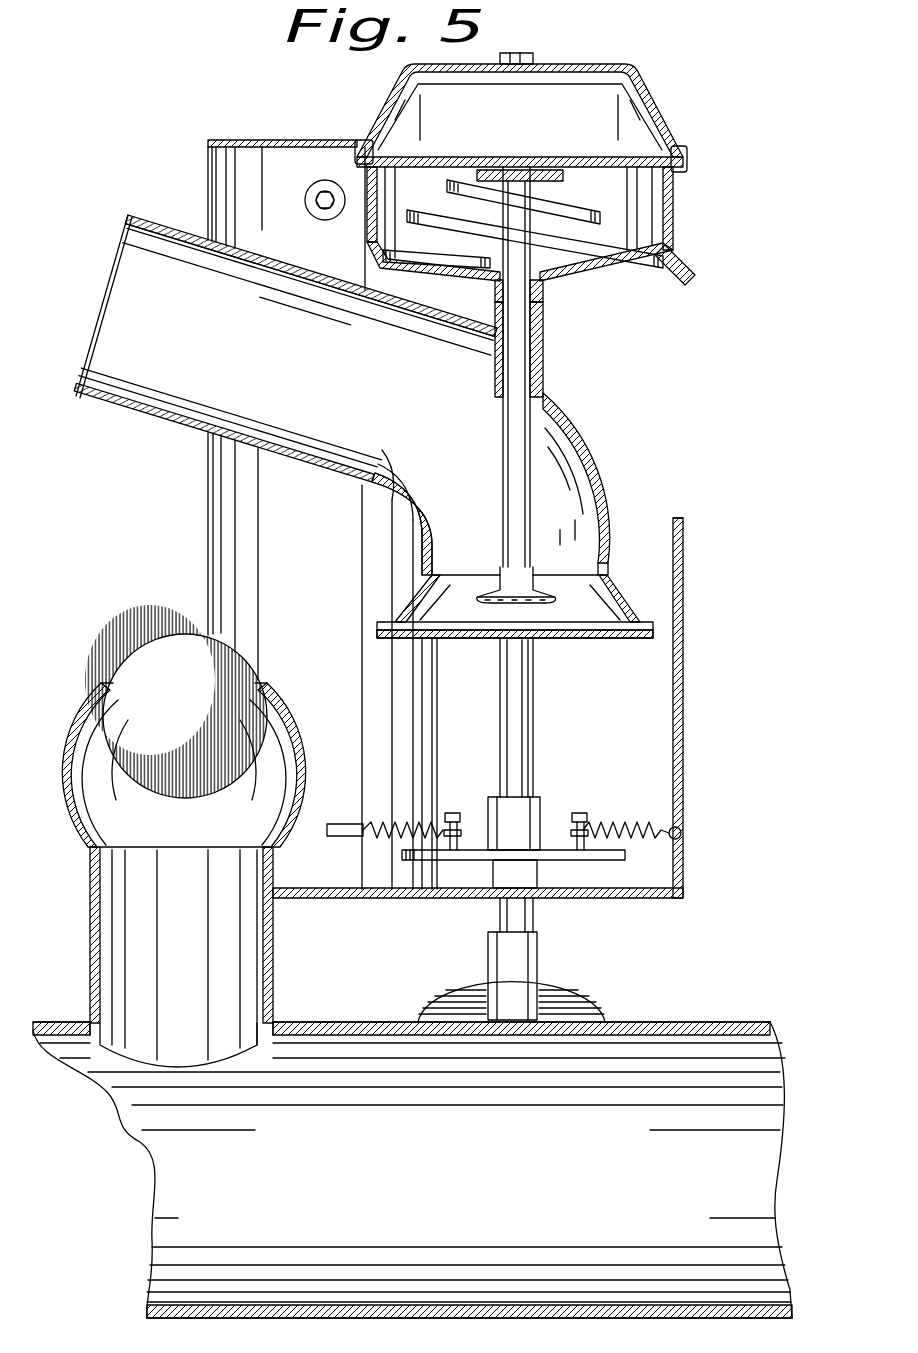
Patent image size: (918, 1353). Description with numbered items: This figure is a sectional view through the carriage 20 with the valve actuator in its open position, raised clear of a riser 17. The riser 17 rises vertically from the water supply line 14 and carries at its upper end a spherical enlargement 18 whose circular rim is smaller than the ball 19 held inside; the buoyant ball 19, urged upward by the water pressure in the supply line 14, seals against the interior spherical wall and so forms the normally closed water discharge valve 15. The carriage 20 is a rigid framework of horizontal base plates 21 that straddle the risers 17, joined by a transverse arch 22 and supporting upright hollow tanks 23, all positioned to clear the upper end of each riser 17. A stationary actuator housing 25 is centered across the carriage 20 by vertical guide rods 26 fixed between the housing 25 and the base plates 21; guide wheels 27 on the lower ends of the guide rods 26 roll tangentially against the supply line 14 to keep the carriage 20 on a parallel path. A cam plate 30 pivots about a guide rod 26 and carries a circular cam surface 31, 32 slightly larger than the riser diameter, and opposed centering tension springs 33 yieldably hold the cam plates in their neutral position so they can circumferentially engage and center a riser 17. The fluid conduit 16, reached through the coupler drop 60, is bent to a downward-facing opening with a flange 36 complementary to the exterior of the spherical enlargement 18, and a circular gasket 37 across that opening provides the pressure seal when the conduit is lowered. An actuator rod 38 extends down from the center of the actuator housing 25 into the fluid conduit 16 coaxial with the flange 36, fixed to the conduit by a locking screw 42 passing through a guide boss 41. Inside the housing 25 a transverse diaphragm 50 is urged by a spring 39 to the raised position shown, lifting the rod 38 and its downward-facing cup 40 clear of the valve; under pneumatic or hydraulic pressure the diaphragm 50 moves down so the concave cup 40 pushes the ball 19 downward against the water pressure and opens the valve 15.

The water supply line 14 is at (144, 1136).
The water discharge valve 15 is at (304, 778).
The fluid conduit 16 is at (163, 426).
The riser 17 is at (275, 962).
The spherical enlargement 18 is at (300, 748).
The ball 19 is at (246, 672).
The carriage 20 is at (696, 543).
The base plates 21 is at (432, 897).
The transverse arch 22 is at (686, 576).
The hollow tanks 23 is at (206, 556).
The actuator housing 25 is at (670, 207).
The guide rods 26 is at (533, 708).
The guide wheels 27 is at (572, 990).
The cam plate 30 is at (556, 860).
The circular cam surface 31 is at (470, 861).
The circular cam surface 32 is at (600, 860).
The centering tension springs 33 is at (395, 818).
The flange 36 is at (612, 595).
The circular gasket 37 is at (600, 638).
The actuator rod 38 is at (512, 433).
The spring 39 is at (560, 206).
The cup 40 is at (522, 600).
The guide boss 41 is at (543, 373).
The locking screw 42 is at (543, 348).
The diaphragm 50 is at (560, 152).
The coupler drop 60 is at (104, 414).